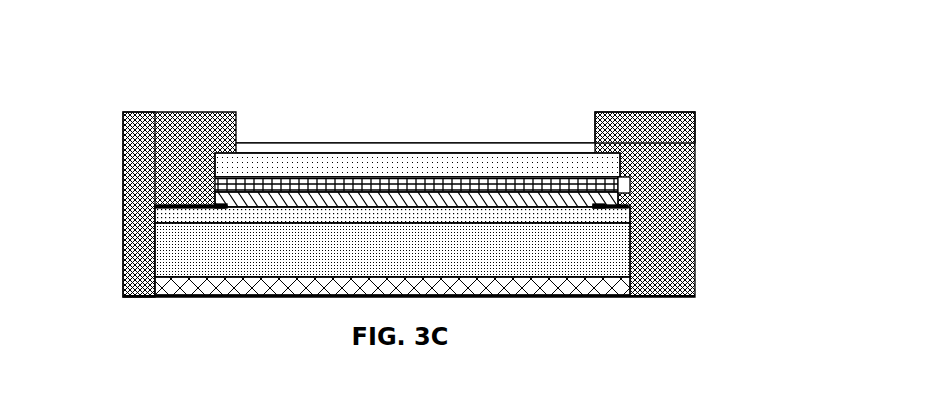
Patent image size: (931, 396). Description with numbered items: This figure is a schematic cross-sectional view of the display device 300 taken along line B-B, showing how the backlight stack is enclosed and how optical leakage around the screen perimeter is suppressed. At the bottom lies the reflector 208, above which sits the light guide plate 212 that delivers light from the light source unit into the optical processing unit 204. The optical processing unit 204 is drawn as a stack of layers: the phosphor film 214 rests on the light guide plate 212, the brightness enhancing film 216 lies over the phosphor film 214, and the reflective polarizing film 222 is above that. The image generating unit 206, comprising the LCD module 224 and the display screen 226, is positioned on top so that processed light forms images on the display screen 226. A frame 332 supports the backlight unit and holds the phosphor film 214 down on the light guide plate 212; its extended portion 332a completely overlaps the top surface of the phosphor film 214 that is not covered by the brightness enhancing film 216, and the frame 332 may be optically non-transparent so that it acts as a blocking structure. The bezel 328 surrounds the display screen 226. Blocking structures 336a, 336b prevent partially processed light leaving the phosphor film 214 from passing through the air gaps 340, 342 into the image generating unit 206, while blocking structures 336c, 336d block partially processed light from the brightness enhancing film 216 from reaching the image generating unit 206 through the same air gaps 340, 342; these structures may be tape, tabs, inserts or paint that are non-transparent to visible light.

The display device 300 is at (676, 73).
The frame 332 is at (695, 203).
The extended portion 332a is at (170, 160).
The bezel 328 is at (697, 124).
The air gap 342 is at (125, 185).
The image generating unit 206 is at (287, 112).
The display screen 226 is at (300, 147).
The LCD module 224 is at (337, 163).
The optical processing unit 204 is at (410, 116).
The reflective polarizing film 222 is at (412, 187).
The brightness enhancing film 216 is at (450, 202).
The phosphor film 214 is at (487, 217).
The air gap 340 is at (622, 193).
The blocking structure 336a is at (614, 208).
The blocking structure 336b is at (182, 209).
The blocking structure 336c is at (597, 201).
The blocking structure 336d is at (226, 196).
The light guide plate 212 is at (617, 257).
The reflector 208 is at (515, 292).